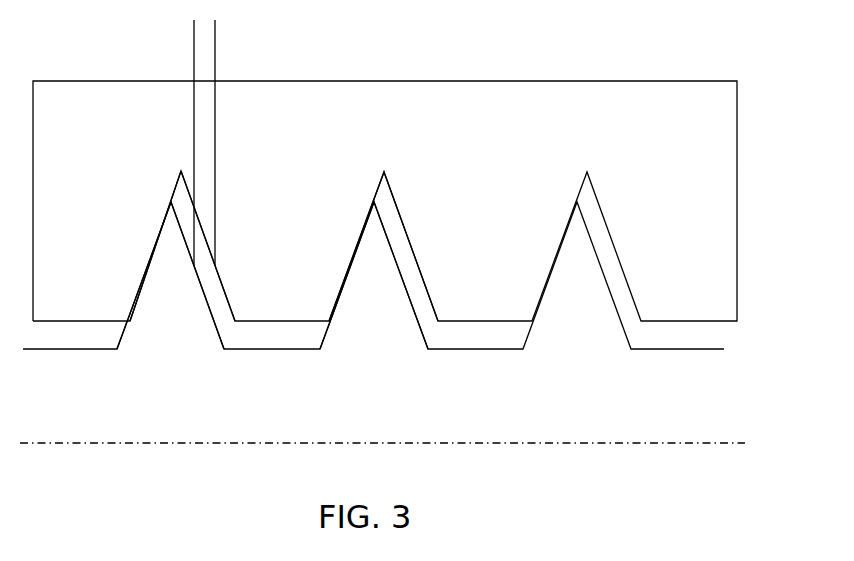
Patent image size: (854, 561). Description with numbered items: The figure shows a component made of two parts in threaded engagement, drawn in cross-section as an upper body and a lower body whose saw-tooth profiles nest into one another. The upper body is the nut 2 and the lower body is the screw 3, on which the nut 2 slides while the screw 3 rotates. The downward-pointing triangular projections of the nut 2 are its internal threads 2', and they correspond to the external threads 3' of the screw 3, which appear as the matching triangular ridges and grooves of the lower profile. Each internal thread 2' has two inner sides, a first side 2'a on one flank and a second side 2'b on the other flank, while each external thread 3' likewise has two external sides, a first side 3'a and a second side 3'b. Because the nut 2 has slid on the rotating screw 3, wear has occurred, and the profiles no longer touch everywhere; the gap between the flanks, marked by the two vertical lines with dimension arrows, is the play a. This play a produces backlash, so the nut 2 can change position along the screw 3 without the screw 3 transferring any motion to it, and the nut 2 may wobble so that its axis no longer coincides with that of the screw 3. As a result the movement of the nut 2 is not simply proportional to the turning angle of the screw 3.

The nut 2 is at (385, 201).
The internal threads 2' is at (386, 228).
The first side 2'a is at (128, 246).
The second side 2'b is at (249, 246).
The screw 3 is at (382, 322).
The external threads 3' is at (374, 275).
The first side 3'a is at (144, 289).
The second side 3'b is at (197, 289).
The play a is at (160, 264).